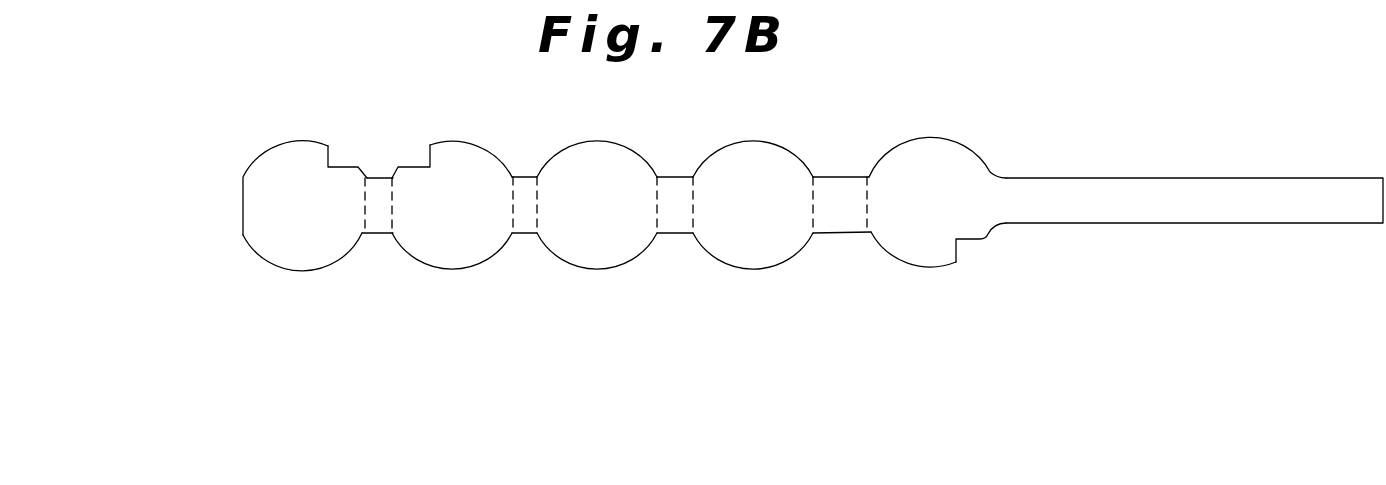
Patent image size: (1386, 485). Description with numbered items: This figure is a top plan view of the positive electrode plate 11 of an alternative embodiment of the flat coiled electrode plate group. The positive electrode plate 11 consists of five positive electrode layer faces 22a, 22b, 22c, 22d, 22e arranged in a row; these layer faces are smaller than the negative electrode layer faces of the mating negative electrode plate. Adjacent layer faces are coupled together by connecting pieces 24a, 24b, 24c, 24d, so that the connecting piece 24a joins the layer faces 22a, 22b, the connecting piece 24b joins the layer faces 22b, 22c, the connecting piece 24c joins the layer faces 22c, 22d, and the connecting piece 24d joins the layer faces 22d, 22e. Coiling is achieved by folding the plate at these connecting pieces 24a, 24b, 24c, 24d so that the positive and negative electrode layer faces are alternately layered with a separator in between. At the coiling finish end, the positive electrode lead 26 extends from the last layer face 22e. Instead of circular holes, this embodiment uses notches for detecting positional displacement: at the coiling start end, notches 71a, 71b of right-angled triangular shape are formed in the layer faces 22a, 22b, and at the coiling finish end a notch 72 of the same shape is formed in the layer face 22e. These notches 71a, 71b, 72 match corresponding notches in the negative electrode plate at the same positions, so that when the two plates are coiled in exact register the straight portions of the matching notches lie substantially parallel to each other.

The positive electrode plate 11 is at (1068, 150).
The positive electrode layer face 22a is at (313, 270).
The positive electrode layer face 22b is at (455, 270).
The positive electrode layer face 22c is at (603, 270).
The positive electrode layer face 22d is at (762, 270).
The positive electrode layer face 22e is at (920, 252).
The connecting piece 24a is at (378, 195).
The connecting piece 24b is at (525, 193).
The connecting piece 24c is at (677, 192).
The connecting piece 24d is at (840, 192).
The positive electrode lead 26 is at (1175, 210).
The notch 71a is at (338, 158).
The notch 71b is at (413, 160).
The notch 72 is at (985, 241).